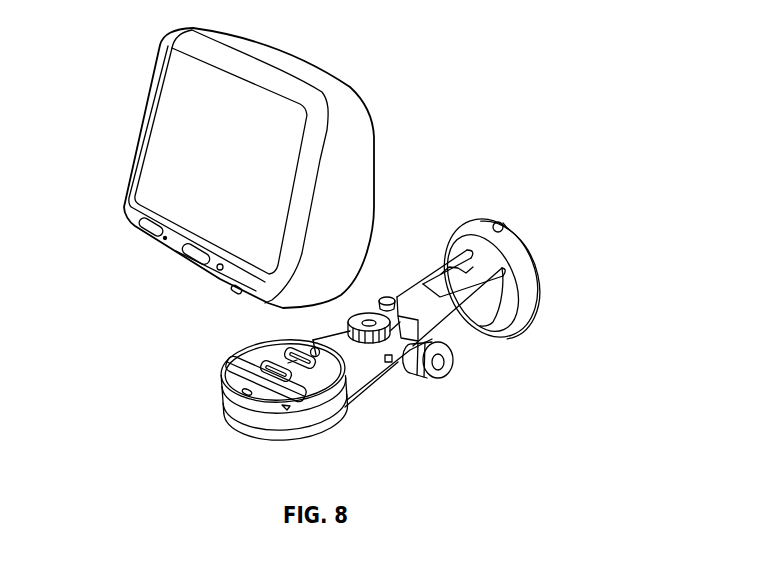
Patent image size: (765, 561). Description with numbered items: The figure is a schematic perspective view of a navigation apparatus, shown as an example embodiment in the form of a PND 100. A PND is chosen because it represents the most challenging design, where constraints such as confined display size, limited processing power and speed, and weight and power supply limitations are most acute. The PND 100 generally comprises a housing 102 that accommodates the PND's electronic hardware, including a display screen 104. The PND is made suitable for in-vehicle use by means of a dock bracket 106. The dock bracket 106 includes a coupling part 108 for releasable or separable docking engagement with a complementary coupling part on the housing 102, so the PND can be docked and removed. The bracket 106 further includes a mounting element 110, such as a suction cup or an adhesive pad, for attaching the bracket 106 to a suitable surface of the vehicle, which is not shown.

The PND 100 is at (116, 283).
The housing 102 is at (357, 147).
The display screen 104 is at (173, 173).
The dock bracket 106 is at (347, 358).
The coupling part 108 is at (220, 395).
The mounting element 110 is at (518, 323).